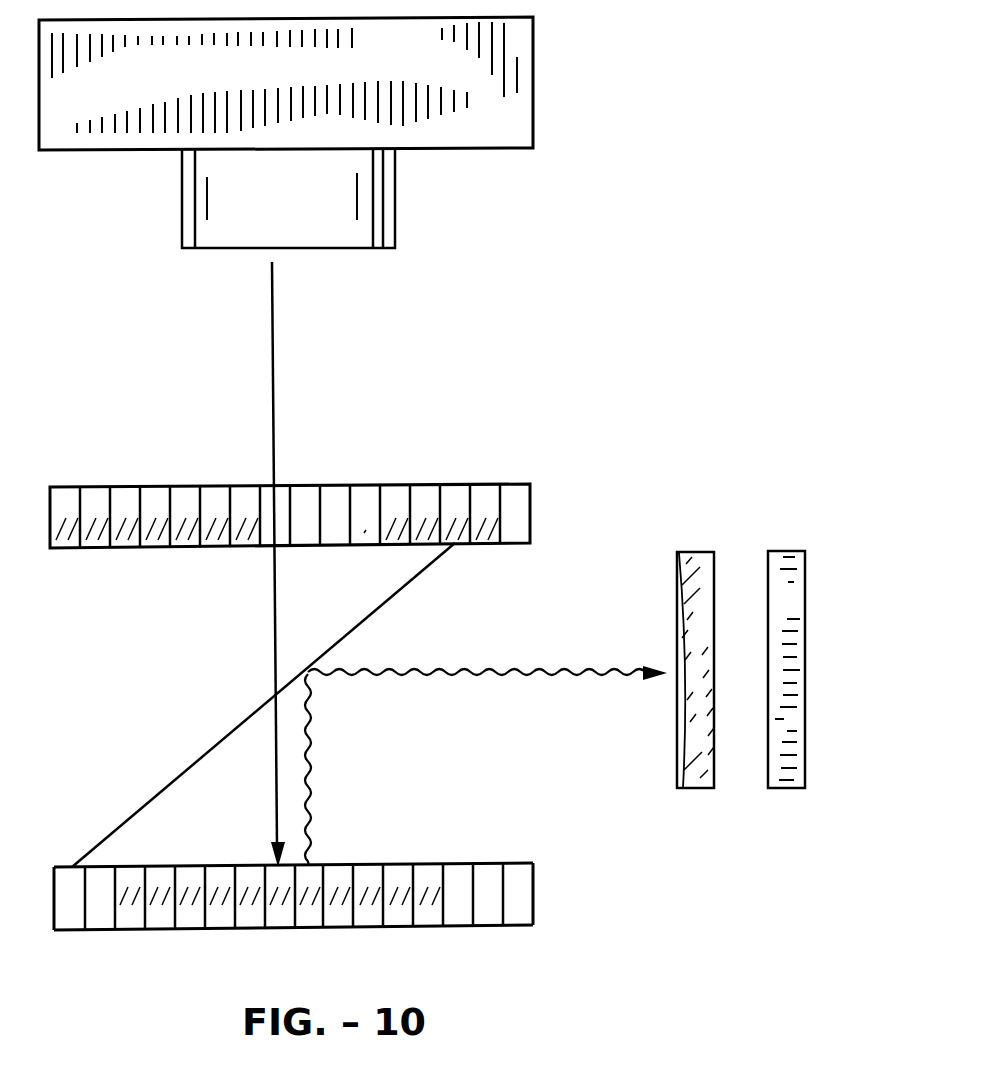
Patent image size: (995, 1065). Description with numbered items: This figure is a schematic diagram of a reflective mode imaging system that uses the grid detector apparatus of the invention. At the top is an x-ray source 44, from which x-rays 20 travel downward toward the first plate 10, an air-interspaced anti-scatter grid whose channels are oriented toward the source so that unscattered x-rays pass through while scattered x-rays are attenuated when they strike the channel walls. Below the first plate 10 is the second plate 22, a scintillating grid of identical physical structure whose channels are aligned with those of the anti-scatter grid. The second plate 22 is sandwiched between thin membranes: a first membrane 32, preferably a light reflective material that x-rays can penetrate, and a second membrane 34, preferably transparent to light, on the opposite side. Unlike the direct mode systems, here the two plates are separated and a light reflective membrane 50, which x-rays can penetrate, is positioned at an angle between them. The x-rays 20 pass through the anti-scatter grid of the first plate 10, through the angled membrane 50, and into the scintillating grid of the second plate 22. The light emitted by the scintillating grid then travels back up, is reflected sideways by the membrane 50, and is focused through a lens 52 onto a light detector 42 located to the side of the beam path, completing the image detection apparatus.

The x-ray source 44 is at (533, 90).
The x-rays 20 is at (274, 382).
The first plate 10 is at (546, 513).
The light reflective membrane 50 is at (385, 603).
The second plate 22 is at (361, 890).
The second membrane 34 is at (523, 862).
The first membrane 32 is at (341, 944).
The lens 52 is at (694, 790).
The light detector 42 is at (805, 775).